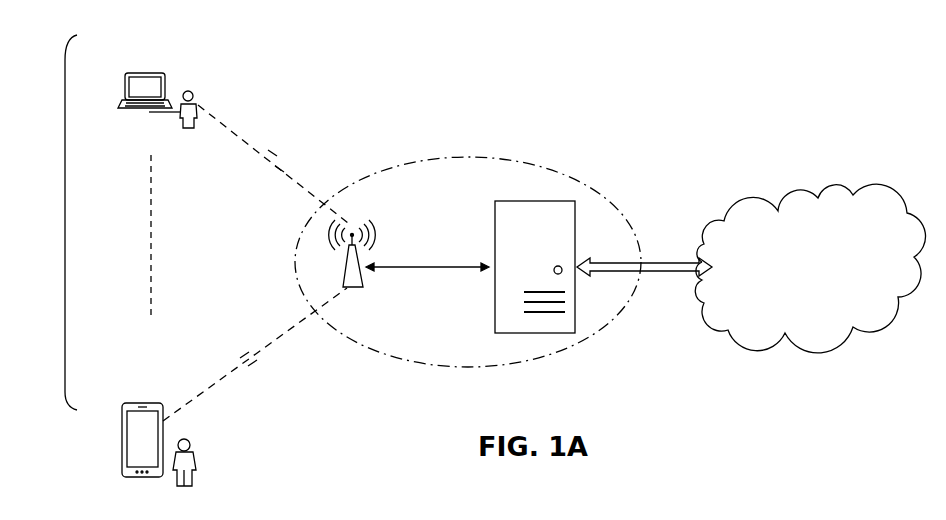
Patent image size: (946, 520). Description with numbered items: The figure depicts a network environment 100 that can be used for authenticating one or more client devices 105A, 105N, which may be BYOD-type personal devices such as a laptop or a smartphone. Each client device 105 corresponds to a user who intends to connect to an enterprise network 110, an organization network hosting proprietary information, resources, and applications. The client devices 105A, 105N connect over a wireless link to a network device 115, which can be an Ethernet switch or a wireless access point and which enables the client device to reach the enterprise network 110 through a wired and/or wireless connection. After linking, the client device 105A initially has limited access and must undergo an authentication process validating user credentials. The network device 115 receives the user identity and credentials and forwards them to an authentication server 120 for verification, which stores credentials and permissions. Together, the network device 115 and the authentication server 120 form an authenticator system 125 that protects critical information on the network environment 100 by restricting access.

The network environment 100 is at (465, 27).
The client device 105 is at (63, 178).
The client device 105A is at (147, 73).
The client device 105N is at (143, 402).
The enterprise network 110 is at (727, 223).
The network device 115 is at (365, 282).
The authentication server 120 is at (509, 200).
The authenticator system 125 is at (503, 156).